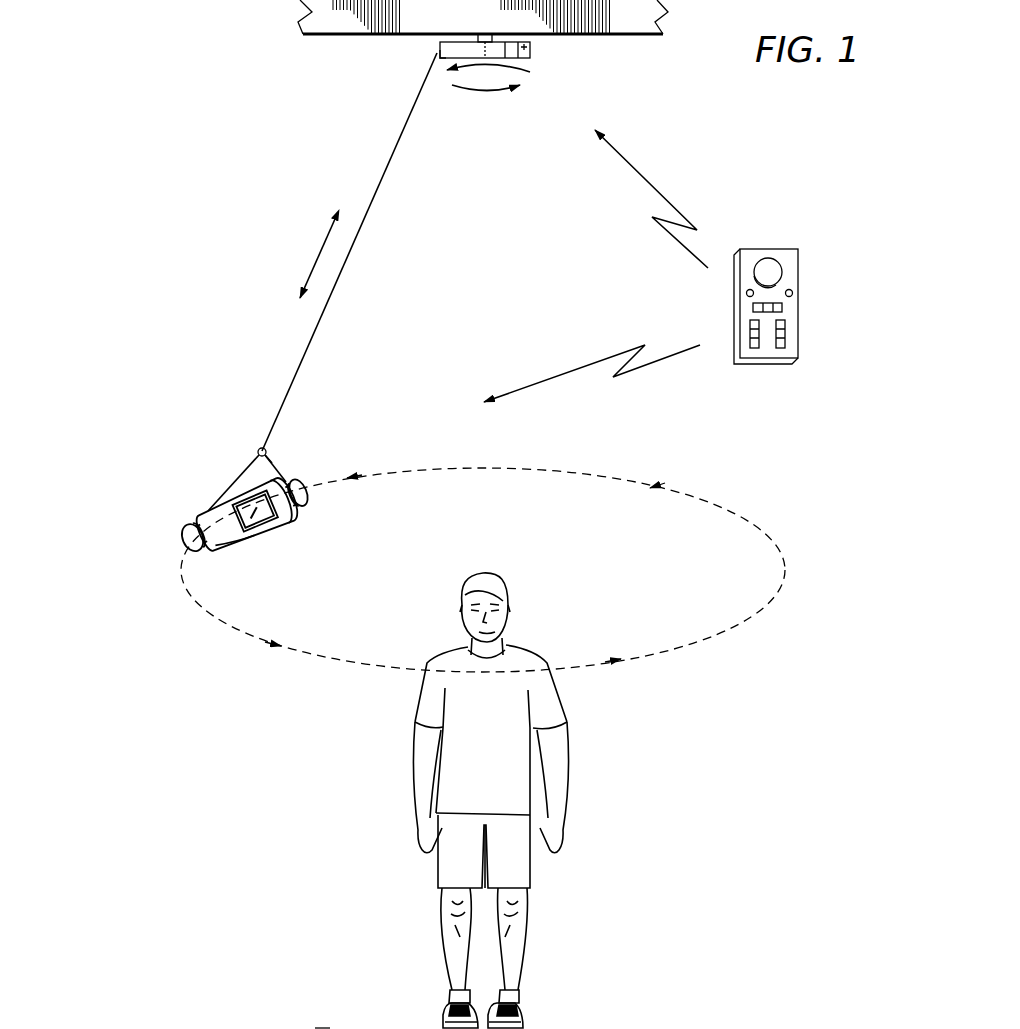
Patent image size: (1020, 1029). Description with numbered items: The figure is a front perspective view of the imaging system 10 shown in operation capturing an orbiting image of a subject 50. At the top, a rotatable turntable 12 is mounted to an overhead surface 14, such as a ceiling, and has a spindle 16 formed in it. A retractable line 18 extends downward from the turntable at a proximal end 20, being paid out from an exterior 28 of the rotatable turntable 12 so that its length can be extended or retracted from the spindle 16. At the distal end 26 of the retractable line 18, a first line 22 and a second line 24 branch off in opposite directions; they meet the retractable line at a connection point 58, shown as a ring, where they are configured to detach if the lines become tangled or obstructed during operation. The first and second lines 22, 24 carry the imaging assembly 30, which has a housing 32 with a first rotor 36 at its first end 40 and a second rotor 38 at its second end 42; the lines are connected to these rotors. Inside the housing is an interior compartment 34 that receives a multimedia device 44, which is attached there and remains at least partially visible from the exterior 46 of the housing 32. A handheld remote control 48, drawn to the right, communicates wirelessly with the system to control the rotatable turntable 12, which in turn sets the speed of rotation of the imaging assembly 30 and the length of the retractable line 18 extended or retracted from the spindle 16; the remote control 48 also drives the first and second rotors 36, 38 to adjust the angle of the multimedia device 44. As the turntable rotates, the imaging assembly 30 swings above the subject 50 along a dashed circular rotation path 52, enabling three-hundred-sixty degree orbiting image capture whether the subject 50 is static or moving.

The imaging system 10 is at (240, 125).
The rotatable turntable 12 is at (529, 58).
The overhead surface 14 is at (325, 22).
The spindle 16 is at (315, 1028).
The retractable line 18 is at (378, 199).
The proximal end 20 is at (428, 53).
The first line 22 is at (233, 480).
The second line 24 is at (283, 470).
The distal end 26 is at (282, 447).
The exterior 28 is at (528, 47).
The imaging assembly 30 is at (202, 500).
The housing 32 is at (237, 548).
The interior compartment 34 is at (280, 510).
The first rotor 36 is at (183, 530).
The second rotor 38 is at (308, 500).
The first end 40 is at (180, 546).
The second end 42 is at (310, 497).
The multimedia device 44 is at (250, 528).
The exterior 46 is at (222, 532).
The remote control 48 is at (798, 272).
The subject 50 is at (527, 637).
The rotation path 52 is at (745, 623).
The connection point 58 is at (257, 448).